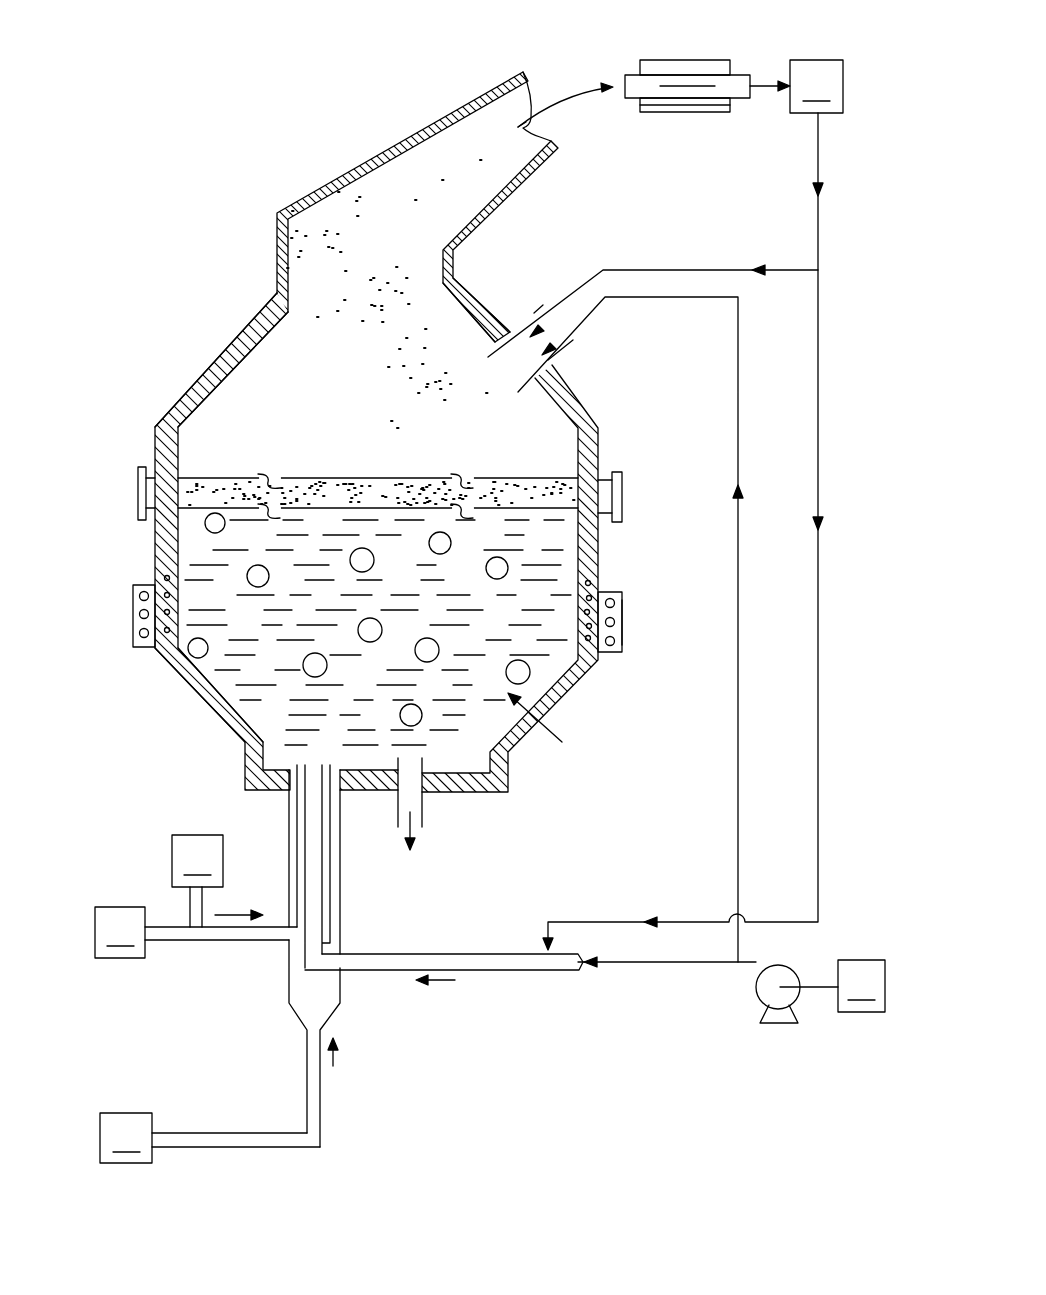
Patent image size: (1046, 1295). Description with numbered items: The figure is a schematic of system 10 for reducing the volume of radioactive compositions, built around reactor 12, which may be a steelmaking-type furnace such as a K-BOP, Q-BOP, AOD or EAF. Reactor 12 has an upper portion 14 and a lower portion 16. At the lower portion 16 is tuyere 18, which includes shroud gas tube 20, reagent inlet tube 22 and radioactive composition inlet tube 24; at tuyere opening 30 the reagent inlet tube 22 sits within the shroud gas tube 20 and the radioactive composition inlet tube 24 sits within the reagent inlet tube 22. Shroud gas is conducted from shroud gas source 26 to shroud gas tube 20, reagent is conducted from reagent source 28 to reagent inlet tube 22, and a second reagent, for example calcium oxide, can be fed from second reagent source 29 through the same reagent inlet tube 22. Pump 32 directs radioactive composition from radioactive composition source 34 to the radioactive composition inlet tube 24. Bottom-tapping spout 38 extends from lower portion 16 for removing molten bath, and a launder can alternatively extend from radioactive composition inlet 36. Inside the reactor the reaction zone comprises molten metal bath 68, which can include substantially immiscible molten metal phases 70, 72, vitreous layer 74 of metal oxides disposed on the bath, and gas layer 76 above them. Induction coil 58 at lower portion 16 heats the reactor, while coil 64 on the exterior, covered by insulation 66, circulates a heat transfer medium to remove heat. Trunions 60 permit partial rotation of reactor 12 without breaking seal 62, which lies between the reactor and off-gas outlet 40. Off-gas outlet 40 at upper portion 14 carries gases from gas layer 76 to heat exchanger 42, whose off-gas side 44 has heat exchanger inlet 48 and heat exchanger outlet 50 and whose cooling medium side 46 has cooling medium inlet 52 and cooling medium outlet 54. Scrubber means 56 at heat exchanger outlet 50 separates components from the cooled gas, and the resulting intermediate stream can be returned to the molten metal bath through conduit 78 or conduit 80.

The system 10 is at (240, 250).
The reactor 12 is at (152, 548).
The upper portion 14 is at (203, 378).
The lower portion 16 is at (200, 700).
The tuyere 18 is at (345, 842).
The shroud gas tube 20 is at (288, 1003).
The reagent inlet tube 22 is at (197, 945).
The radioactive composition inlet tube 24 is at (420, 950).
The shroud gas source 26 is at (210, 1138).
The reagent source 28 is at (120, 932).
The second reagent source 29 is at (197, 881).
The tuyere opening 30 is at (318, 777).
The pump 32 is at (760, 1015).
The radioactive composition source 34 is at (832, 986).
The radioactive composition inlet 36 is at (570, 352).
The bottom-tapping spout 38 is at (425, 812).
The off-gas outlet 40 is at (432, 124).
The heat exchanger 42 is at (668, 57).
The off-gas side 44 is at (637, 92).
The cooling medium side 46 is at (690, 70).
The heat exchanger inlet 48 is at (624, 82).
The heat exchanger outlet 50 is at (760, 77).
The cooling medium inlet 52 is at (718, 62).
The cooling medium outlet 54 is at (655, 110).
The scrubber means 56 is at (816, 86).
The induction coil 58 is at (597, 583).
The trunions 60 is at (136, 488).
The seal 62 is at (464, 268).
The coil 64 is at (628, 605).
The insulation 66 is at (628, 640).
The molten metal bath 68 is at (551, 728).
The molten metal phase 70 is at (286, 647).
The molten metal phase 72 is at (438, 556).
The vitreous layer 74 is at (392, 478).
The gas layer 76 is at (388, 198).
The conduit 78 is at (665, 270).
The conduit 80 is at (820, 668).